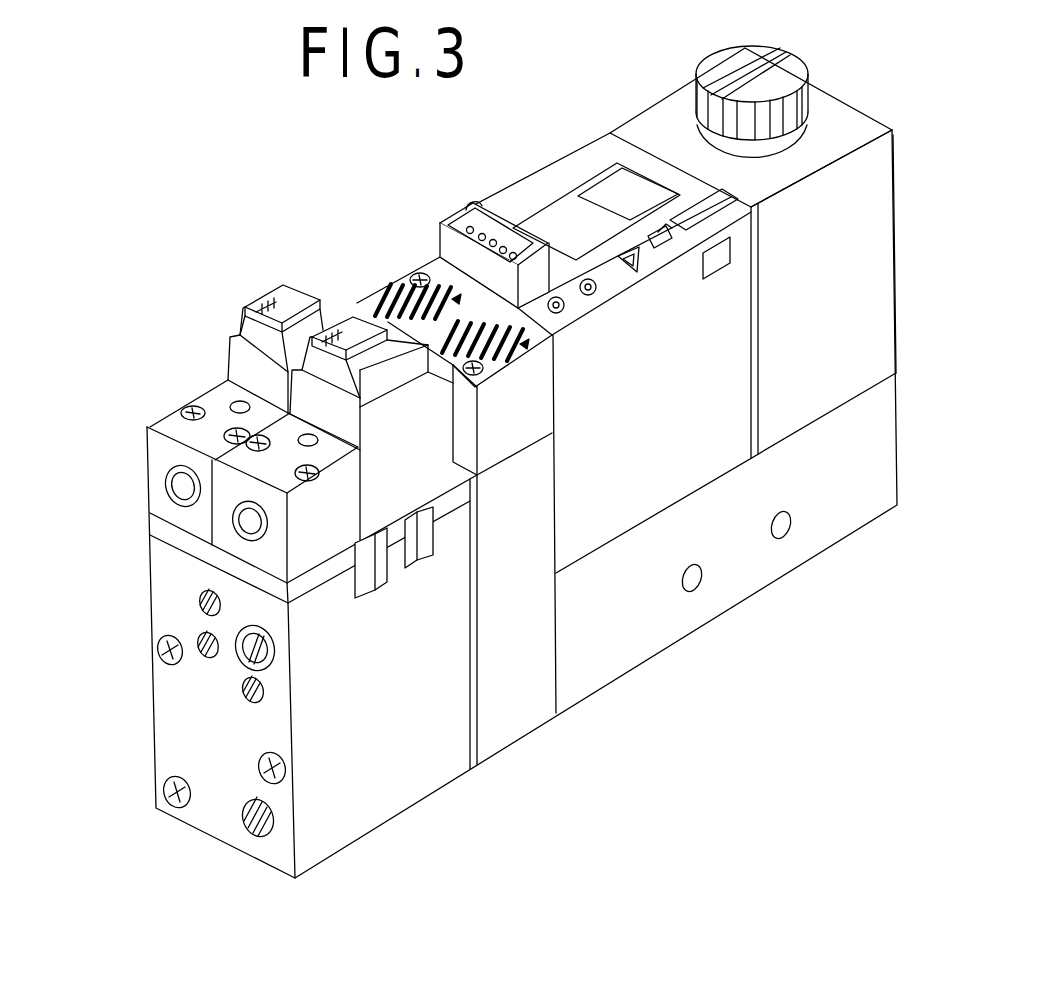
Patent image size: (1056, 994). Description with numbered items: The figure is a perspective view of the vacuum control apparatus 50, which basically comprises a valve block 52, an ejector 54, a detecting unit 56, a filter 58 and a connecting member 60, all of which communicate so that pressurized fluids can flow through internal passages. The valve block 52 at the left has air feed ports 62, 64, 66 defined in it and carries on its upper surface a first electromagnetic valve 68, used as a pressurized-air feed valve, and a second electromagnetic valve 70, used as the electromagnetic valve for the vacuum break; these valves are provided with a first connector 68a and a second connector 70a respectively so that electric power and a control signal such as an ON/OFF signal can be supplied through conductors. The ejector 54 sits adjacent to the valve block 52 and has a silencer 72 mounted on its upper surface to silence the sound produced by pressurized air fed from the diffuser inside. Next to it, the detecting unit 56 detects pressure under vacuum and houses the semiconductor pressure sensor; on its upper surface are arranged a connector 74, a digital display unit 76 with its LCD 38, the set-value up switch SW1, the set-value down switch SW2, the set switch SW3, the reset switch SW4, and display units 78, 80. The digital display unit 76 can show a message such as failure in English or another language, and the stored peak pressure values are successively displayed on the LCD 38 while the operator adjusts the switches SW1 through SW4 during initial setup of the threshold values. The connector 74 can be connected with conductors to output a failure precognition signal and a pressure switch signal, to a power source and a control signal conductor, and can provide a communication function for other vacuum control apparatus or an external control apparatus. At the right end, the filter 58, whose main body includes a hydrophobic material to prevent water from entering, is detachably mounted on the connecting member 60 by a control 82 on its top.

The vacuum control apparatus 50 is at (513, 98).
The valve block 52 is at (155, 812).
The ejector 54 is at (515, 724).
The detecting unit 56 is at (700, 462).
The filter 58 is at (855, 302).
The connecting member 60 is at (870, 480).
The air feed port 62 is at (205, 652).
The air feed port 64 is at (245, 692).
The air feed port 66 is at (256, 835).
The first electromagnetic valve 68 is at (158, 485).
The first connector 68a is at (278, 308).
The second electromagnetic valve 70 is at (260, 550).
The second connector 70a is at (347, 335).
The silencer 72 is at (388, 298).
The connector 74 is at (462, 212).
The digital display unit 76 is at (584, 197).
The LCD 38 is at (628, 194).
The display unit 78 is at (700, 218).
The display unit 80 is at (722, 258).
The control 82 is at (793, 75).
The set-value up switch SW1 is at (638, 270).
The set-value down switch SW2 is at (668, 243).
The set switch SW3 is at (590, 296).
The reset switch SW4 is at (560, 313).